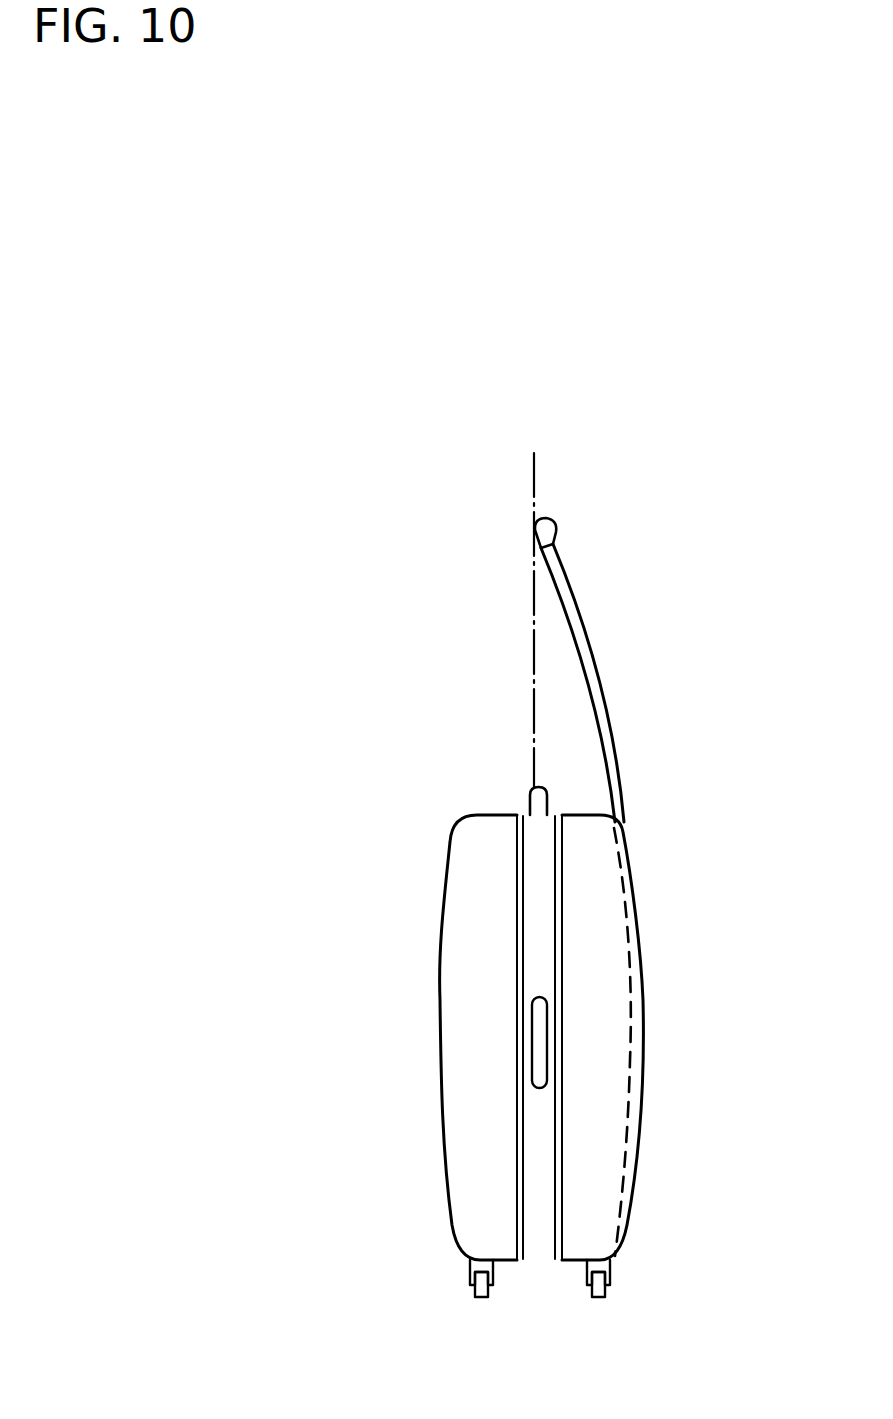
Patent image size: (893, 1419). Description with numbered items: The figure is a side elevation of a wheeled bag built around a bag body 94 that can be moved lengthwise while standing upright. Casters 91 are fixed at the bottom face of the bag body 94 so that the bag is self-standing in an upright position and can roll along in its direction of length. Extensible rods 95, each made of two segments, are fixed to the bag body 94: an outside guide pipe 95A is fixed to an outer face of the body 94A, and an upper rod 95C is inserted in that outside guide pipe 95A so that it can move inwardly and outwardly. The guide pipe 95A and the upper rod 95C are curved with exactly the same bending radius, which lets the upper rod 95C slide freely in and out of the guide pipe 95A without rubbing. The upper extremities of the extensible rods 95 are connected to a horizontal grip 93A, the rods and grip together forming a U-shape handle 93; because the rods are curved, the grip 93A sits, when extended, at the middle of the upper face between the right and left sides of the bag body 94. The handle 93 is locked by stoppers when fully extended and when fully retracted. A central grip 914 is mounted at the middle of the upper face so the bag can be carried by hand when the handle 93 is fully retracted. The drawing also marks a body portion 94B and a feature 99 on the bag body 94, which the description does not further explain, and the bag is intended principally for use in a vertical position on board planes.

The casters 91 is at (479, 1291).
The handle 93 is at (608, 491).
The horizontal grip 93A is at (549, 522).
The bag body 94 is at (543, 996).
The body 94A is at (602, 1150).
The body rear half 94B is at (459, 1150).
The extensible rods 95 is at (652, 900).
The outside guide pipe 95A is at (637, 962).
The upper rod 95C is at (603, 697).
The handle slot 99 is at (537, 1030).
The central grip 914 is at (530, 803).